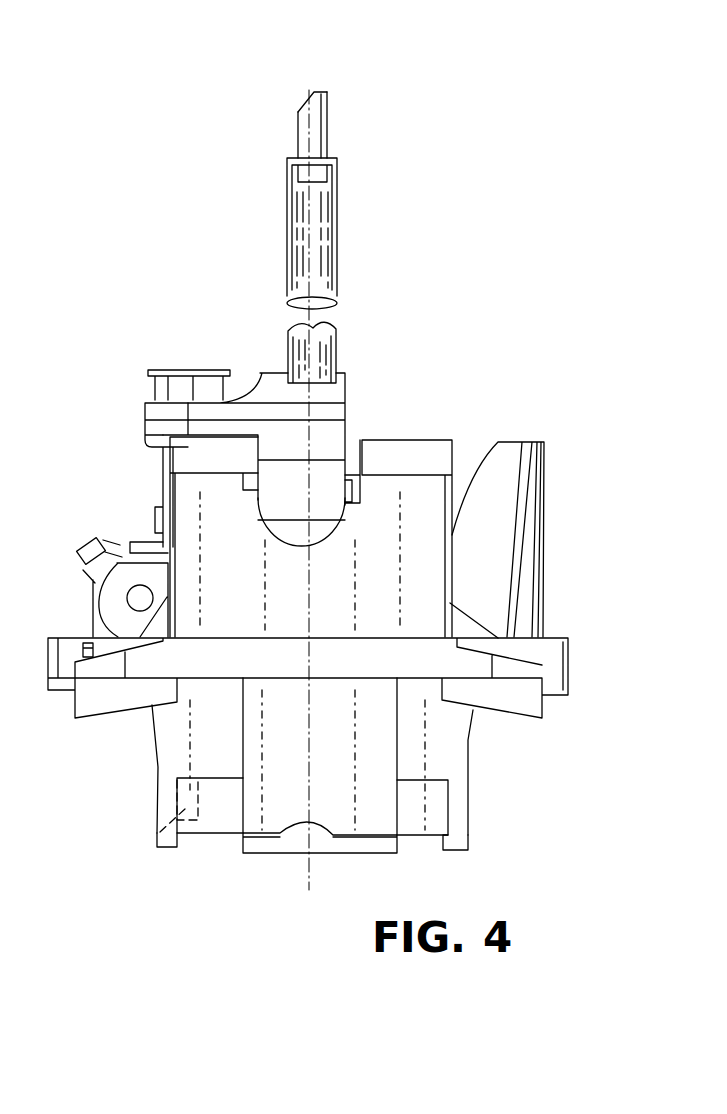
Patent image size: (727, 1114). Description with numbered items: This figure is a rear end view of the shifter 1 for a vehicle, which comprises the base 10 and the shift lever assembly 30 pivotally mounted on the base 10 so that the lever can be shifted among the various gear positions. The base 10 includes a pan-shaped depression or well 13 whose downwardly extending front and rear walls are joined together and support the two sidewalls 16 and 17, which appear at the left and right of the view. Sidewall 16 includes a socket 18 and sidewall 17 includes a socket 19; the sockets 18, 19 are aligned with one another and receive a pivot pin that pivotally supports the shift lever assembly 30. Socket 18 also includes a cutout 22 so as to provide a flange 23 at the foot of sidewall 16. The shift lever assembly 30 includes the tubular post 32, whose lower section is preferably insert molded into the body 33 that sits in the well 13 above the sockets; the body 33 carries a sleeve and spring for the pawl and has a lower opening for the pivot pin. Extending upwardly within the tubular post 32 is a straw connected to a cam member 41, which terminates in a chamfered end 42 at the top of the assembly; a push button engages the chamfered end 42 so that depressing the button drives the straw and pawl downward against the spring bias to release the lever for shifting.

The shifter 1 is at (415, 140).
The base 10 is at (540, 440).
The pan-shaped depression or well 13 is at (472, 764).
The sidewall 16 is at (152, 716).
The sidewall 17 is at (470, 808).
The socket 18 is at (205, 825).
The socket 19 is at (420, 828).
The cutout 22 is at (156, 834).
The flange 23 is at (165, 772).
The shift lever assembly 30 is at (348, 318).
The tubular post 32 is at (337, 208).
The body 33 is at (352, 380).
The cam member 41 is at (315, 116).
The chamfered end 42 is at (313, 93).